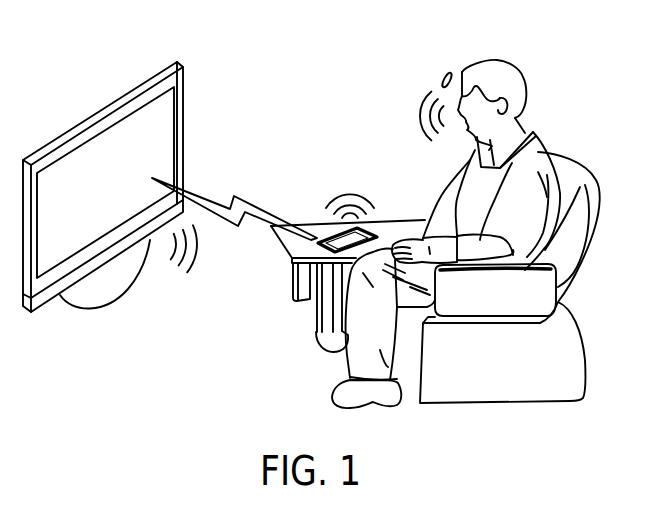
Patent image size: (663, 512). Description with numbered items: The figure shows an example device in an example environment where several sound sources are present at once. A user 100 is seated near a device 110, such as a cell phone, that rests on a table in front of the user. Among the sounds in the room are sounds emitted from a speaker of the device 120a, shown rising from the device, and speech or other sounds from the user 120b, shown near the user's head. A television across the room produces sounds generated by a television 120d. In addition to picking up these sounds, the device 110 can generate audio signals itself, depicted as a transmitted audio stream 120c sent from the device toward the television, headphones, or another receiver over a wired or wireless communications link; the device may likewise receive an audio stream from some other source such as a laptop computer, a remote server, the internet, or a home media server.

The user 100 is at (568, 62).
The device 110 is at (292, 259).
The sounds emitted from a speaker of the device 120a is at (350, 174).
The speech or other sounds from the user 120b is at (451, 72).
The transmitted audio stream 120c is at (212, 186).
The sounds generated by a television 120d is at (190, 268).